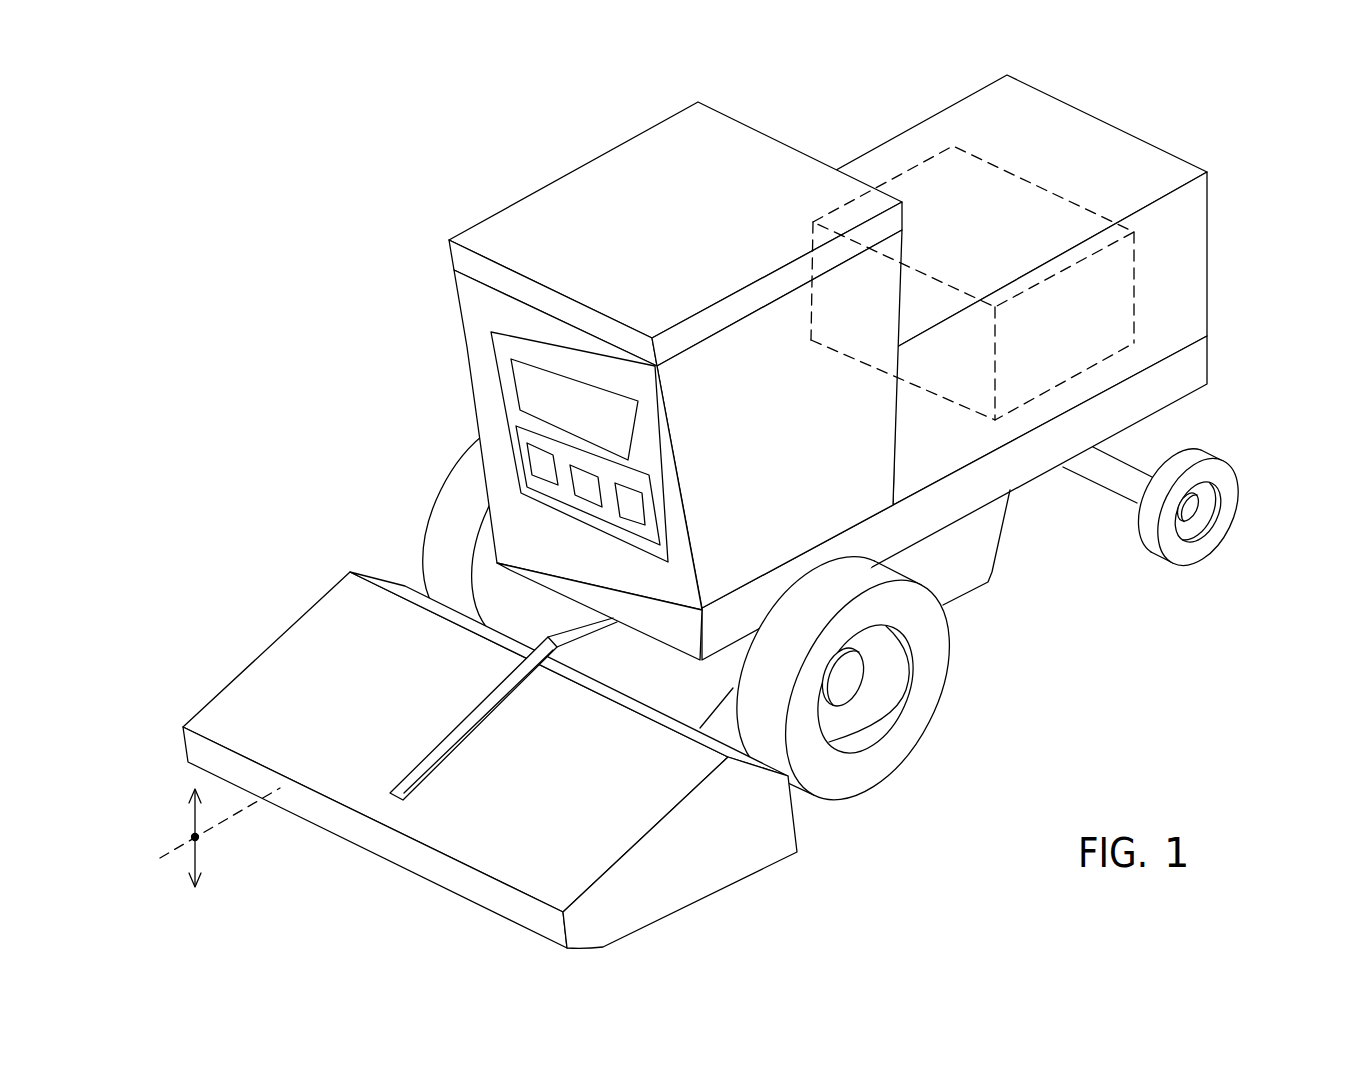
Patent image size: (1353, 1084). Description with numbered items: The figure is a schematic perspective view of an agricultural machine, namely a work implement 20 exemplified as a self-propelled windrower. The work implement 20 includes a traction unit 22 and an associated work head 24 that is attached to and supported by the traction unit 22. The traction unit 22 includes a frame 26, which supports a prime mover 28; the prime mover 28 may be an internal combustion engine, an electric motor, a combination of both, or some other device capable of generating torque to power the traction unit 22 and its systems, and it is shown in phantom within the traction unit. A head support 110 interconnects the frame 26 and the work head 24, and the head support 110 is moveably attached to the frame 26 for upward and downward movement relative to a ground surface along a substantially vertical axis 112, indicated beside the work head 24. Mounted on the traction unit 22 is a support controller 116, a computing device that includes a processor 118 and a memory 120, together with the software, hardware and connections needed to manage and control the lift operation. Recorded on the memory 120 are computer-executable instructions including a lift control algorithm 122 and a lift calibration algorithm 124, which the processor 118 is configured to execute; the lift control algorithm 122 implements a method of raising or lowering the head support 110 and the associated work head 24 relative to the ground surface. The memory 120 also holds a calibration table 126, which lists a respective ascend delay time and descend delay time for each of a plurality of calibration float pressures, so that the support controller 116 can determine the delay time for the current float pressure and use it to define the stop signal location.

The work implement 20 is at (701, 386).
The traction unit 22 is at (947, 122).
The work head 24 is at (295, 650).
The frame 26 is at (1012, 465).
The prime mover 28 is at (1133, 290).
The head support 110 is at (532, 607).
The substantially vertical axis 112 is at (190, 828).
The support controller 116 is at (533, 430).
The processor 118 is at (597, 418).
The memory 120 is at (533, 465).
The lift control algorithm 122 is at (587, 485).
The lift calibration algorithm 124 is at (633, 508).
The calibration table 126 is at (540, 460).